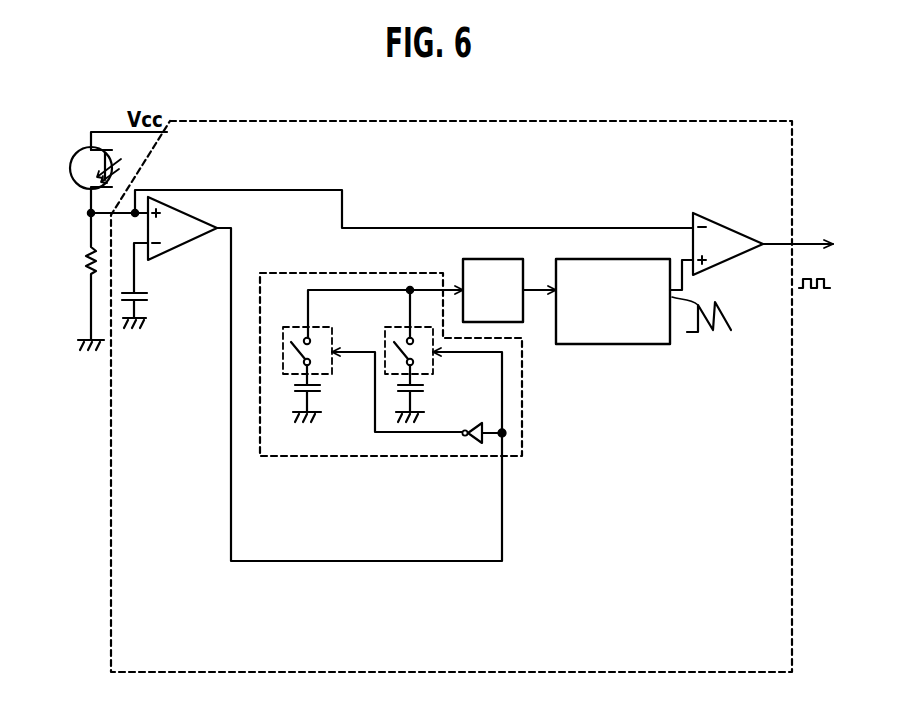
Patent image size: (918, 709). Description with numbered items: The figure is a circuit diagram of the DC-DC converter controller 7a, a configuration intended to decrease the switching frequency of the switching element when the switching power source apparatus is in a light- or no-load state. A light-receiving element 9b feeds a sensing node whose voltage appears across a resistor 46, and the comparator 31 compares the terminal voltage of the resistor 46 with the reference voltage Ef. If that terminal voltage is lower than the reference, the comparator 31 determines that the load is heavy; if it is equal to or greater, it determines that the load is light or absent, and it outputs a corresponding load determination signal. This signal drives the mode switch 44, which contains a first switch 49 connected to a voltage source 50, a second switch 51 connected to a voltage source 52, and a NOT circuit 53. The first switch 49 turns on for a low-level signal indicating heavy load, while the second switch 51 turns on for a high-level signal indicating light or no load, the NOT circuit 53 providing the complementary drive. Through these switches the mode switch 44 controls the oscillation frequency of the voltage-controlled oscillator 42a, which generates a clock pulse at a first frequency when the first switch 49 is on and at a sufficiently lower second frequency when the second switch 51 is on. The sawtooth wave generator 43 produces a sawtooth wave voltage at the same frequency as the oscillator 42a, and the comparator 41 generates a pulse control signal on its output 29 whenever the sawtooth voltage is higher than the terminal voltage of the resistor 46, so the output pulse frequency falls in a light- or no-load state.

The DC-DC converter controller 7a is at (703, 120).
The phototransistor (light receiving element) 9b is at (73, 150).
The resistor 46 is at (80, 262).
The comparator 31 is at (200, 237).
The comparator 41 is at (747, 230).
The PWM output signal line 29 is at (815, 275).
The voltage-controlled oscillator 42a is at (462, 262).
The sawtooth wave generator 43 is at (653, 346).
The mode switch 44 is at (421, 392).
The first switch 49 is at (300, 327).
The voltage source 50 is at (321, 388).
The second switch 51 is at (392, 329).
The voltage source 52 is at (432, 388).
The NOT circuit 53 is at (474, 444).